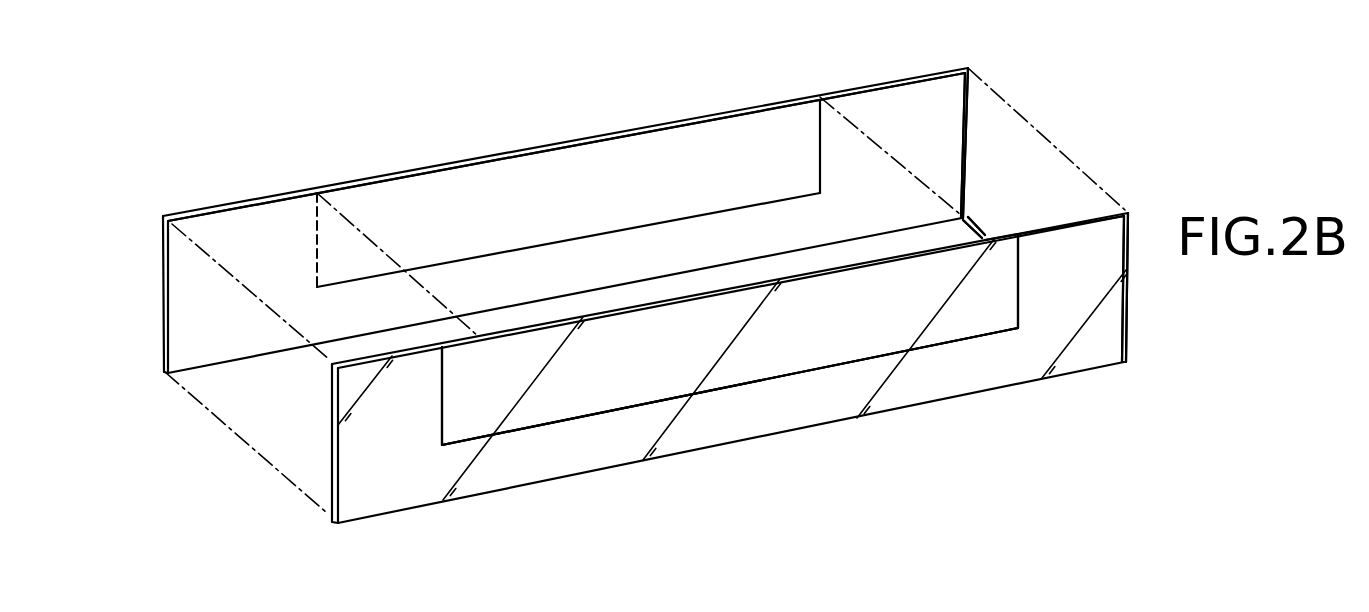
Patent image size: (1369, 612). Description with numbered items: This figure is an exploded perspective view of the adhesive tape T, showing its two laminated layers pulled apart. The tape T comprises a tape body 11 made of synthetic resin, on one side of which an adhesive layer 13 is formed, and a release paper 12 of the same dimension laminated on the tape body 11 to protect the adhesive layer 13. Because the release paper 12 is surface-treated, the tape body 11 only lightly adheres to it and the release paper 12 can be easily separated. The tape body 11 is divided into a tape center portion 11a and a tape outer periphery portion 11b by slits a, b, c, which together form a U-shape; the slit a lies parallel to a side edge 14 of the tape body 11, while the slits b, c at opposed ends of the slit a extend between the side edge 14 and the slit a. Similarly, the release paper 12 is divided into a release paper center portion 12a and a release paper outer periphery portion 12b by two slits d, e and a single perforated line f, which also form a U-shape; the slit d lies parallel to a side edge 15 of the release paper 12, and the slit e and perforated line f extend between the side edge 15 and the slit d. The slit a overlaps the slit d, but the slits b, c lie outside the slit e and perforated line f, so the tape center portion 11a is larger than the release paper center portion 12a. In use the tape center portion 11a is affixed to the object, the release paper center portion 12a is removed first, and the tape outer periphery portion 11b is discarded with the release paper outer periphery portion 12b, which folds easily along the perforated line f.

The adhesive tape T is at (1082, 128).
The tape body 11 is at (332, 436).
The tape center portion 11a is at (783, 360).
The tape outer periphery portion 11b is at (935, 387).
The release paper 12 is at (165, 265).
The release paper center portion 12a is at (560, 163).
The release paper outer periphery portion 12b is at (400, 303).
The adhesive layer 13 is at (1057, 223).
The side edge of the tape body 14 is at (1093, 217).
The side edge of the release paper 15 is at (915, 75).
The slit a is at (607, 413).
The slit b is at (1020, 267).
The slit c is at (442, 398).
The slit d is at (577, 238).
The slit e is at (822, 143).
The perforated line f is at (316, 228).